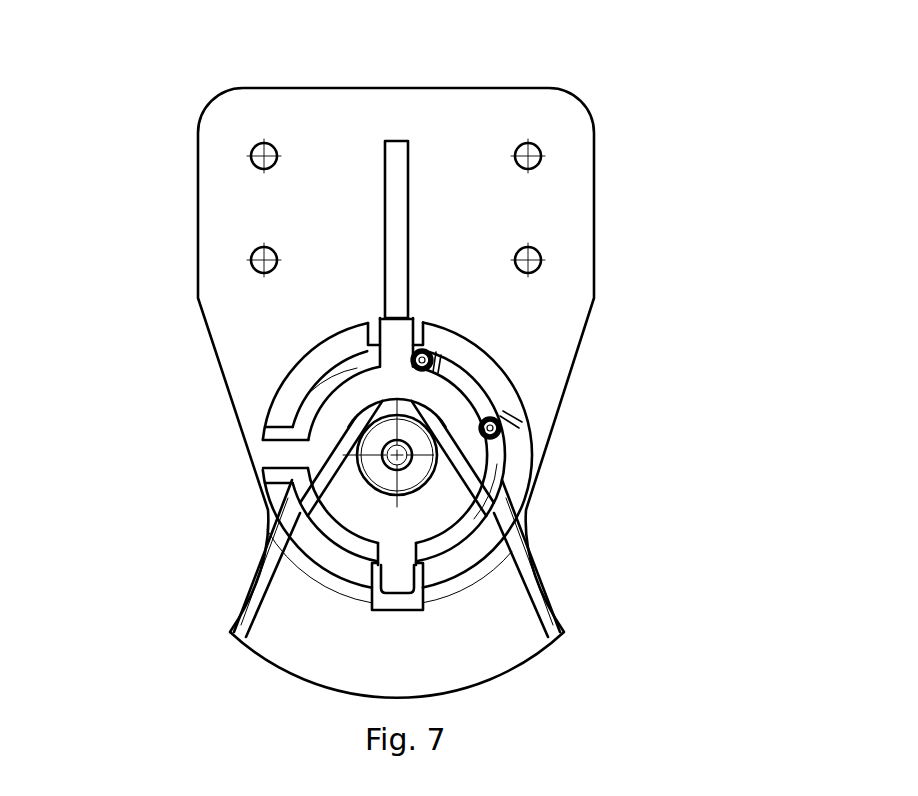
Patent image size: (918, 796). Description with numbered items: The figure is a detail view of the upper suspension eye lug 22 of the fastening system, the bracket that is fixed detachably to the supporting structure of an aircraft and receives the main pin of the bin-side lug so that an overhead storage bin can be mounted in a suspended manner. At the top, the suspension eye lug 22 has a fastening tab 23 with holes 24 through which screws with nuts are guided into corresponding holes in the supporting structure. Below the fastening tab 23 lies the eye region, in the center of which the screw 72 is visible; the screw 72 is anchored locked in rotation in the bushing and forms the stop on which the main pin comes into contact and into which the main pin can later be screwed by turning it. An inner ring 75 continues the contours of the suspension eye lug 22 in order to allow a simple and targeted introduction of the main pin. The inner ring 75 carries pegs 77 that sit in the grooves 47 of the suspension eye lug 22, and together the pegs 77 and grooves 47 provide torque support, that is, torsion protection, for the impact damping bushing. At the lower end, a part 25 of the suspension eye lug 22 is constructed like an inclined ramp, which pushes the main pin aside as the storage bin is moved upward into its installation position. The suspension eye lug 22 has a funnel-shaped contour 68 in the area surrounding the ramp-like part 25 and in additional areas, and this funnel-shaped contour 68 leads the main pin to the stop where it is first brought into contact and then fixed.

The suspension eye lug 22 is at (498, 72).
The fastening tab 23 is at (476, 120).
The holes 24 is at (541, 153).
The ramp-like part 25 is at (477, 637).
The grooves 47 is at (375, 332).
The funnel-shaped contour 68 is at (525, 425).
The screw 72 is at (405, 450).
The inner ring 75 is at (443, 493).
The pegs 77 is at (273, 452).